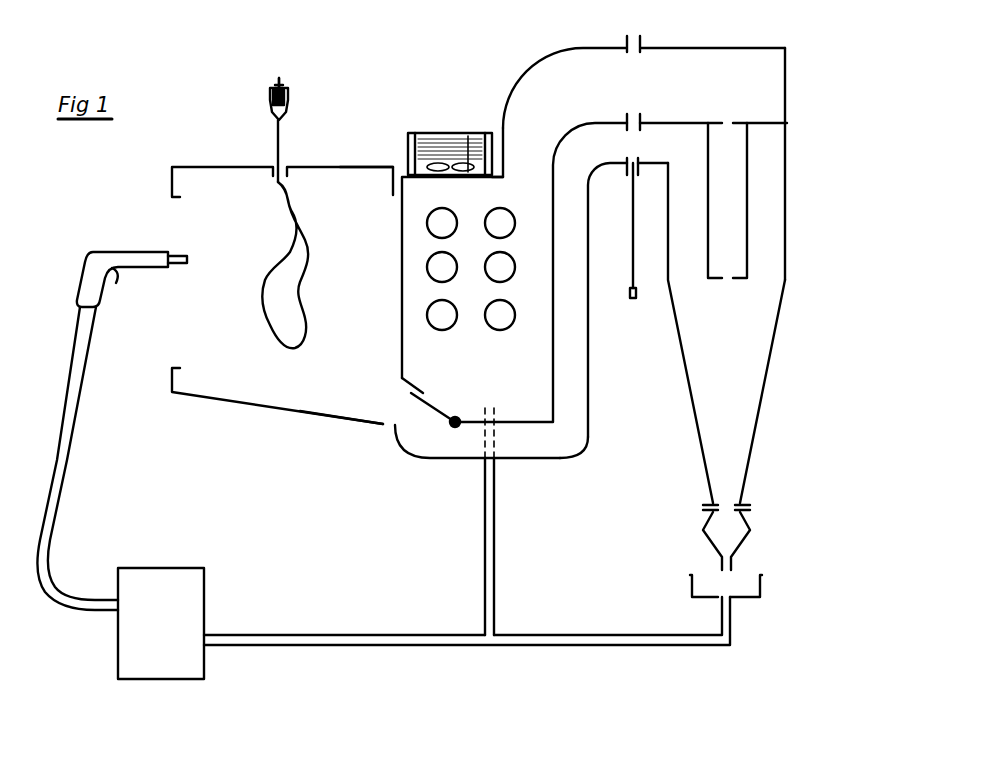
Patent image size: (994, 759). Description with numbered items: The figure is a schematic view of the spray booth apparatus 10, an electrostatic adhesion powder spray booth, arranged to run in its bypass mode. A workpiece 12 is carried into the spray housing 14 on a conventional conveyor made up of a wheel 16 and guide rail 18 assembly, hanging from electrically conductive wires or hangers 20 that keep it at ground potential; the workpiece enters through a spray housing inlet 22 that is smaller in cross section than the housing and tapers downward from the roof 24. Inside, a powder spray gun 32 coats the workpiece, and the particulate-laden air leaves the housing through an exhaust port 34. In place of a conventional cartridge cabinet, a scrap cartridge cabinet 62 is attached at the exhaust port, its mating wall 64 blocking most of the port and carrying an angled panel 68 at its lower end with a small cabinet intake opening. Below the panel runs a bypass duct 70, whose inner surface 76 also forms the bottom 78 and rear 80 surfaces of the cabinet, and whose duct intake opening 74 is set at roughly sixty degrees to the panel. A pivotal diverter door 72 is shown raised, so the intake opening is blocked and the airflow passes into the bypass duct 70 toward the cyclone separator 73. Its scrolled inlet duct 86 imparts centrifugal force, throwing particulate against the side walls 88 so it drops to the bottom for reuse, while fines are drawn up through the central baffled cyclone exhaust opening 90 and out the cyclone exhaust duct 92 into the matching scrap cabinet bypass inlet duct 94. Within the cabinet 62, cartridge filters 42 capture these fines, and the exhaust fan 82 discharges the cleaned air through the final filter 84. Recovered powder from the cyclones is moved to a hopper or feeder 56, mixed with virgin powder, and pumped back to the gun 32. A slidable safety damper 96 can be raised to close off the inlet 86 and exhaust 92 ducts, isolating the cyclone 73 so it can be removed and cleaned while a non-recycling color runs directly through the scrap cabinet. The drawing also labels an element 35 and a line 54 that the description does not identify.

The spray booth apparatus 10 is at (244, 68).
The workpiece 12 is at (298, 291).
The spray housing 14 is at (313, 160).
The wheel 16 is at (290, 96).
The guide rail 18 is at (281, 84).
The hangers 20 is at (276, 143).
The spray housing inlet 22 is at (189, 334).
The roof 24 is at (343, 160).
The spray gun 32 is at (117, 257).
The exhaust port 34 is at (391, 412).
The booth wall opening 35 is at (398, 172).
The cartridge filters 42 is at (497, 314).
The powder feed line 54 is at (497, 548).
The hopper or feeder 56 is at (183, 568).
The scrap cartridge cabinet 62 is at (447, 269).
The mating wall 64 is at (400, 238).
The angled panel 68 is at (420, 385).
The bypass duct 70 is at (575, 393).
The diverter door 72 is at (440, 405).
The cyclone separator 73 is at (750, 392).
The duct intake opening 74 is at (423, 433).
The inner surface 76 is at (621, 311).
The bottom surface 78 is at (540, 428).
The rear surface 80 is at (552, 235).
The exhaust fan 82 is at (468, 136).
The final filter 84 is at (428, 136).
The inlet duct 86 is at (665, 135).
The side walls 88 is at (785, 185).
The cyclone exhaust opening 90 is at (727, 130).
The cyclone exhaust duct 92 is at (651, 60).
The scrap cabinet bypass inlet duct 94 is at (572, 78).
The safety damper 96 is at (630, 238).